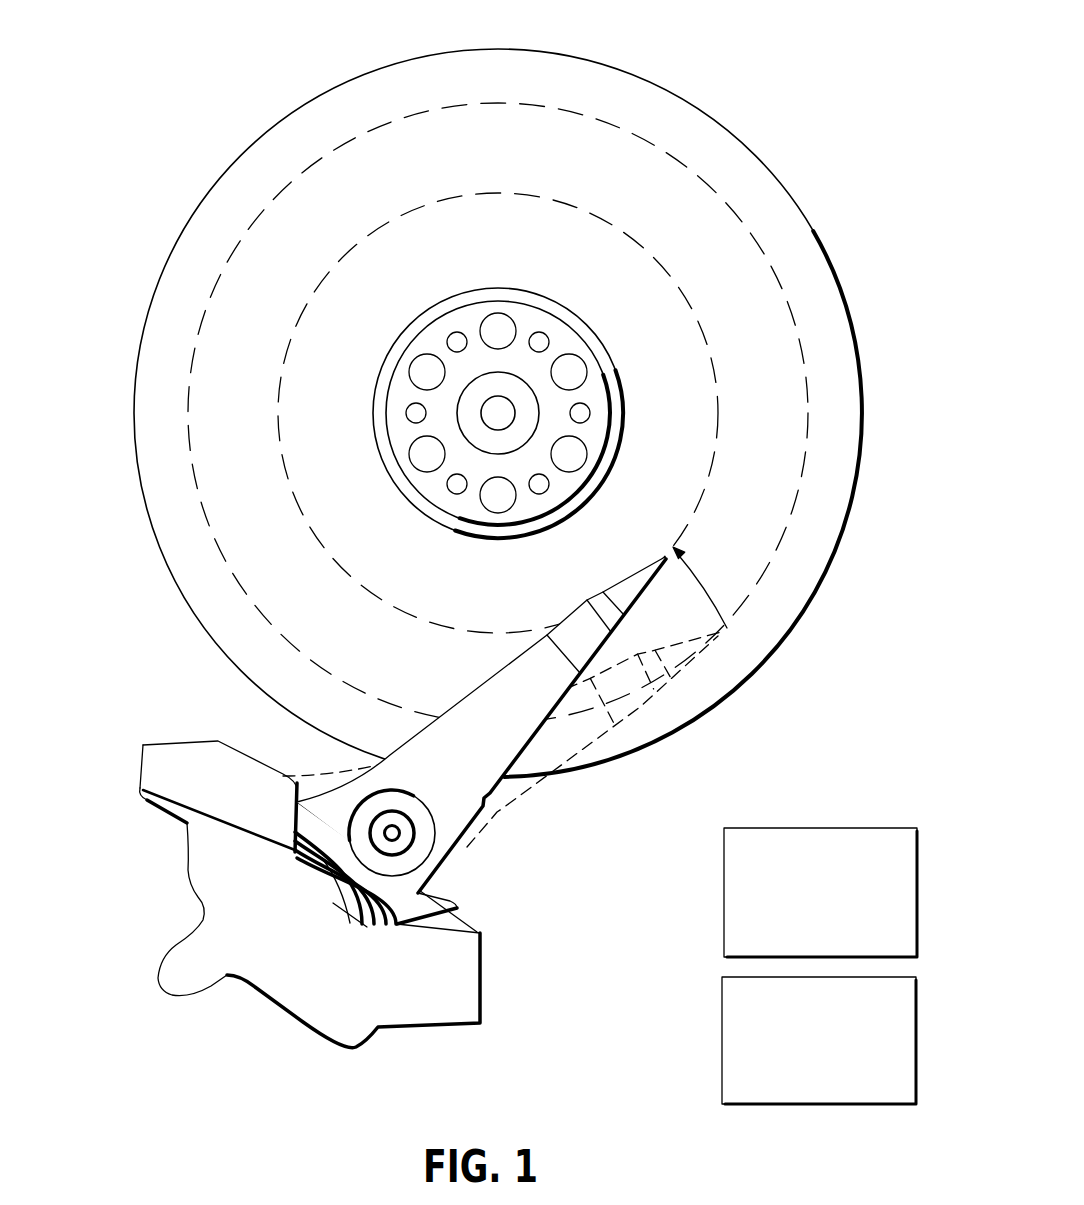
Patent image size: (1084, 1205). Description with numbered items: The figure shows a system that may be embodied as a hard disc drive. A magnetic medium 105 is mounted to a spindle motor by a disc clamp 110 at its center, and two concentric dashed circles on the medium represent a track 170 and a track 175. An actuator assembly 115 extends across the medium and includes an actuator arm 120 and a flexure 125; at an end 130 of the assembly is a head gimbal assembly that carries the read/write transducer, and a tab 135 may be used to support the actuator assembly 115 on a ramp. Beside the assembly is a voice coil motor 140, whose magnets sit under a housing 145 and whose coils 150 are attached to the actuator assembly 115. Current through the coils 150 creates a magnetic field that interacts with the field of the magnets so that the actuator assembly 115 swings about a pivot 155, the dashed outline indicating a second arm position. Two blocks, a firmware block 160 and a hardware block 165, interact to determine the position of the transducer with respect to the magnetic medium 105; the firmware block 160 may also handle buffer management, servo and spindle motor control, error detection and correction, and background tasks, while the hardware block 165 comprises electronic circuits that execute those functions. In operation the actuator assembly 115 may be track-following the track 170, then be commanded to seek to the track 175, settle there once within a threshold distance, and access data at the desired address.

The magnetic medium 105 is at (498, 413).
The disc clamp 110 is at (440, 298).
The actuator assembly 115 is at (505, 719).
The actuator arm 120 is at (520, 755).
The flexure 125 is at (617, 582).
The end 130 is at (653, 560).
The tab 135 is at (666, 563).
The voice coil motor 140 is at (285, 874).
The housing 145 is at (143, 747).
The coils 150 is at (355, 900).
The pivot 155 is at (408, 820).
The firmware block 160 is at (724, 908).
The hardware block 165 is at (722, 1038).
The track 170 is at (778, 558).
The track 175 is at (720, 412).